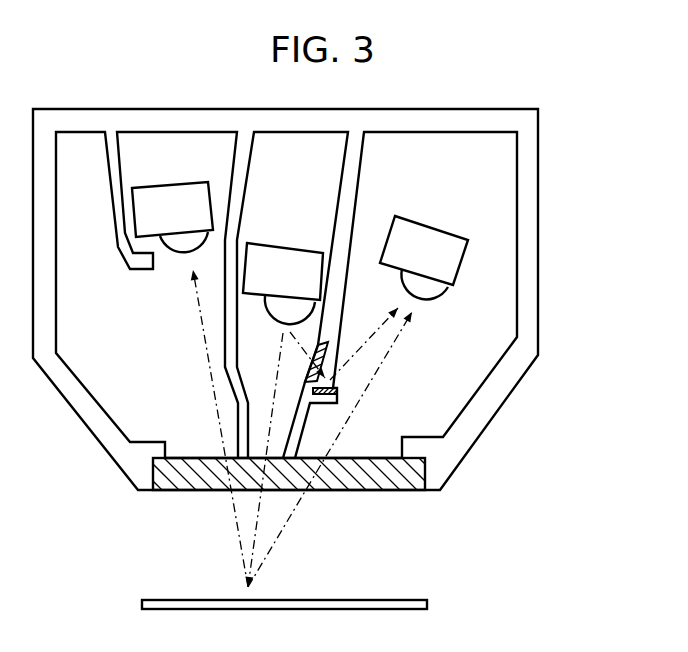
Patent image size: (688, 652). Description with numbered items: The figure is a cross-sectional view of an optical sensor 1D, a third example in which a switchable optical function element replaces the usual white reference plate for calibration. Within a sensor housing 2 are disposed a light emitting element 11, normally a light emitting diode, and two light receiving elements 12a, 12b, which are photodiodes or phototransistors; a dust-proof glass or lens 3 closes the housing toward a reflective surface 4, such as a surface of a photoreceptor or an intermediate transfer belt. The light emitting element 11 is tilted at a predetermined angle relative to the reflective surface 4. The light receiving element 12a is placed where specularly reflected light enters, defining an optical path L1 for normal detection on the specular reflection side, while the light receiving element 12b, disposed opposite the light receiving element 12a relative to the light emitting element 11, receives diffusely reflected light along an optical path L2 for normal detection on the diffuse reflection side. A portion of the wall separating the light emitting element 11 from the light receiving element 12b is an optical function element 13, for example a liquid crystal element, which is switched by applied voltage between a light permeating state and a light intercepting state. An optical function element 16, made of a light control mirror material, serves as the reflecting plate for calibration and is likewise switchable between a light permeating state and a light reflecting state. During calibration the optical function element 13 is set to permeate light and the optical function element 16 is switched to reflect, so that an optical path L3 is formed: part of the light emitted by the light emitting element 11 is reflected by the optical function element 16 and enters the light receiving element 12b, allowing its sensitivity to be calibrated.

The optical sensor 1D is at (578, 138).
The sensor housing 2 is at (82, 420).
The dust-proof glass or lens 3 is at (387, 490).
The reflective surface 4 is at (417, 597).
The light emitting element 11 is at (293, 253).
The light receiving element 12a is at (172, 190).
The light receiving element 12b is at (425, 230).
The optical function element 13 is at (327, 340).
The optical function element 16 is at (332, 380).
The optical path L1 is at (230, 523).
The optical path L2 is at (287, 538).
The optical path L3 is at (362, 353).